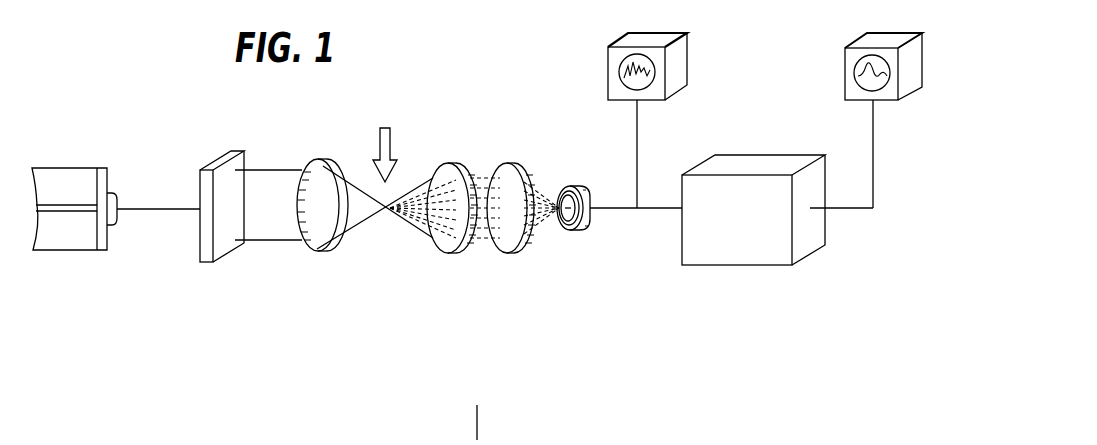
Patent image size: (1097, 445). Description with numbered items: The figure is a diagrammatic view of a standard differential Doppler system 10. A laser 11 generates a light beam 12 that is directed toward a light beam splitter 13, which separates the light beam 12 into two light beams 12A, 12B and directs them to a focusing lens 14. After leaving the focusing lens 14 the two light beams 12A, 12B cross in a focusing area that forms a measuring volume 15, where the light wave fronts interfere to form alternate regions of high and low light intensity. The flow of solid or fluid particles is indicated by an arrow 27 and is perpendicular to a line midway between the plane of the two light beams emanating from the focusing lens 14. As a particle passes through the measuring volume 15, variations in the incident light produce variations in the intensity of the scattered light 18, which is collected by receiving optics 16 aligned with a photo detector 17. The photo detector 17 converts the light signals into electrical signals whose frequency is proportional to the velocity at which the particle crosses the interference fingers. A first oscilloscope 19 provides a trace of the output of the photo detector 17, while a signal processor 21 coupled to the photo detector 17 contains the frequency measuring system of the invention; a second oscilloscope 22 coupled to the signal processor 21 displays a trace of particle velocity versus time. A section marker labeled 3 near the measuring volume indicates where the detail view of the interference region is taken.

The differential Doppler system 10 is at (437, 86).
The laser 11 is at (70, 253).
The light beam 12 is at (153, 207).
The light beam 12A is at (274, 168).
The light beam 12B is at (270, 238).
The light beam splitter 13 is at (222, 160).
The focusing lens 14 is at (328, 163).
The measuring volume 15 is at (387, 212).
The receiving optics 16 is at (493, 240).
The photo detector 17 is at (584, 194).
The scattered light 18 is at (415, 218).
The first oscilloscope 19 is at (670, 32).
The signal processor 21 is at (760, 265).
The second oscilloscope 22 is at (860, 43).
The arrow 27 is at (394, 146).
The section line for FIG. 3 is at (468, 423).